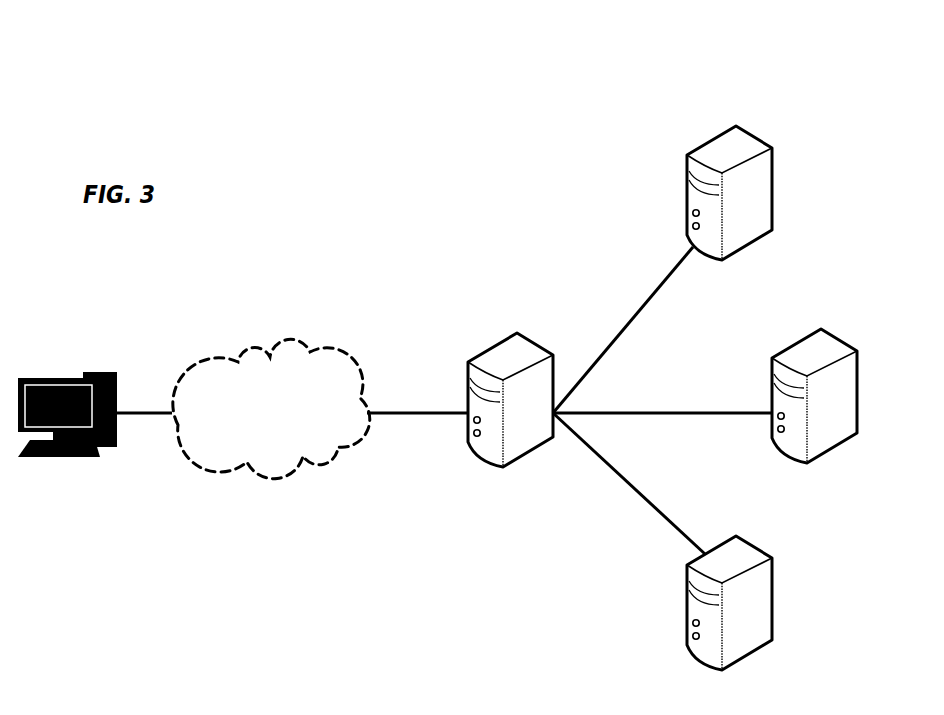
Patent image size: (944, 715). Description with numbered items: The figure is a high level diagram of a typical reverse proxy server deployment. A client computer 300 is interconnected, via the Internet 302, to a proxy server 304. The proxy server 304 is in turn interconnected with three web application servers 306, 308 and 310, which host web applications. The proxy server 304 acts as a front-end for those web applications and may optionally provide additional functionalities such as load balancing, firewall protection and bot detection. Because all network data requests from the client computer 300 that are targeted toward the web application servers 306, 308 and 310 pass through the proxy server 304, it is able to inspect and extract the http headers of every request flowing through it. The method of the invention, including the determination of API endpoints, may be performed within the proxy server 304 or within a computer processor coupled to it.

The client computer 300 is at (45, 380).
The Internet 302 is at (255, 355).
The proxy server 304 is at (502, 352).
The web application server 306 is at (722, 147).
The web application server 308 is at (803, 352).
The web application server 310 is at (725, 557).